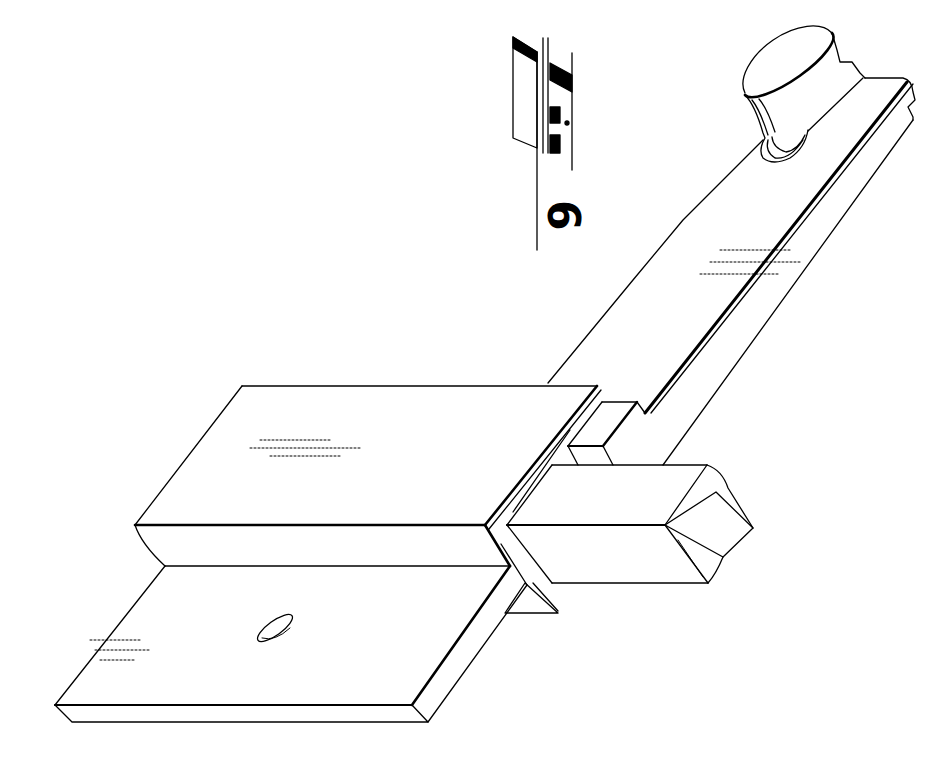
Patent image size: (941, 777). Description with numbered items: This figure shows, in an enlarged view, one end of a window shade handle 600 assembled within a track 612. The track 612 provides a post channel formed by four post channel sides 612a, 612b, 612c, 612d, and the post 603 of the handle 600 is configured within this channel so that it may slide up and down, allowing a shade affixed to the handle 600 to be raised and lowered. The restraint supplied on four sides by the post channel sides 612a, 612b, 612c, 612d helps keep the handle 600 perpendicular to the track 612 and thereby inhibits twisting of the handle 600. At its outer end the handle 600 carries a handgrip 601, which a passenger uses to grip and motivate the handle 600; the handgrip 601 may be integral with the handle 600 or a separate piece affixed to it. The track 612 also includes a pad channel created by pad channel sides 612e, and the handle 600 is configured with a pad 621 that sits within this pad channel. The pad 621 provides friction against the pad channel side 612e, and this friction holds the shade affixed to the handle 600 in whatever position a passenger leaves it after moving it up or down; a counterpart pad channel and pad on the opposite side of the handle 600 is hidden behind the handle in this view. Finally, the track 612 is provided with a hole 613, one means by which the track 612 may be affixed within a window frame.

The handle 600 is at (683, 220).
The handgrip 601 is at (745, 89).
The post 603 is at (648, 541).
The track 612 is at (328, 554).
The post channel side 612a is at (366, 426).
The post channel side 612b is at (577, 635).
The post channel side 612c is at (634, 622).
The post channel side 612d is at (349, 421).
The pad channel side 612e is at (571, 362).
The hole 613 is at (300, 648).
The pad 621 is at (768, 269).